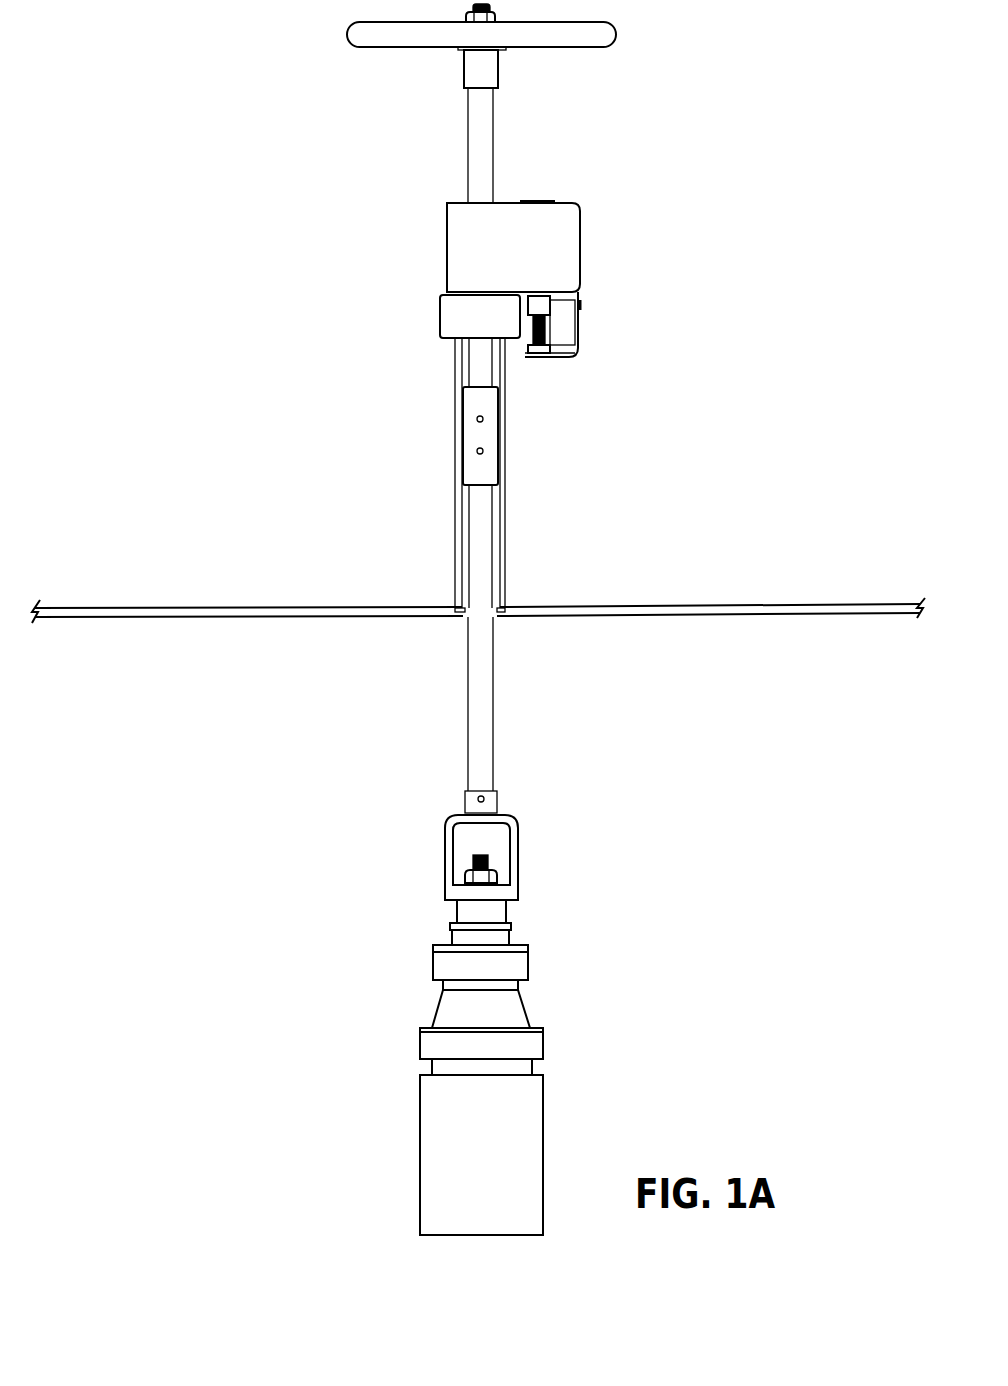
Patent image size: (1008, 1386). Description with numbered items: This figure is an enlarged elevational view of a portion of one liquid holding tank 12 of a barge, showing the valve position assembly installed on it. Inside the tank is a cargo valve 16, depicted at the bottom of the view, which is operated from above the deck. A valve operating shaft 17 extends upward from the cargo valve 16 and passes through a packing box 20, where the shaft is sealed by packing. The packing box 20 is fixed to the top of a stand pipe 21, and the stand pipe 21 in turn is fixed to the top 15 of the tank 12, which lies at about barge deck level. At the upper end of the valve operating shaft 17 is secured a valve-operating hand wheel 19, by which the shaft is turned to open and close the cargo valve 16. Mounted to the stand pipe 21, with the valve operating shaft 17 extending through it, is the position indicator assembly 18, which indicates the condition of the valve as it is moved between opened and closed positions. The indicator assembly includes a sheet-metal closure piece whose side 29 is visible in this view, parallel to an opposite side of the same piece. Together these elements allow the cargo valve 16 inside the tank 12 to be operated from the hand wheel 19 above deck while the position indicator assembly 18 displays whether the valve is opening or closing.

The tank 12 is at (664, 823).
The top of the tank 15 is at (598, 605).
The cargo valve 16 is at (455, 1146).
The valve operating shaft 17 is at (481, 141).
The position indicator assembly 18 is at (509, 272).
The valve-operating hand wheel 19 is at (385, 44).
The packing box 20 is at (455, 315).
The stand pipe 21 is at (455, 380).
The side 29 is at (478, 253).